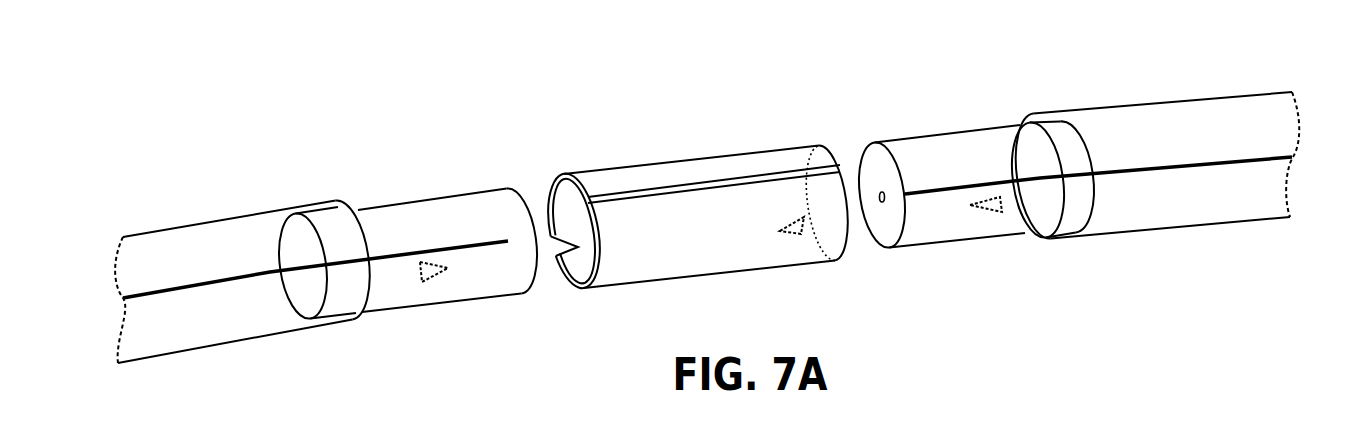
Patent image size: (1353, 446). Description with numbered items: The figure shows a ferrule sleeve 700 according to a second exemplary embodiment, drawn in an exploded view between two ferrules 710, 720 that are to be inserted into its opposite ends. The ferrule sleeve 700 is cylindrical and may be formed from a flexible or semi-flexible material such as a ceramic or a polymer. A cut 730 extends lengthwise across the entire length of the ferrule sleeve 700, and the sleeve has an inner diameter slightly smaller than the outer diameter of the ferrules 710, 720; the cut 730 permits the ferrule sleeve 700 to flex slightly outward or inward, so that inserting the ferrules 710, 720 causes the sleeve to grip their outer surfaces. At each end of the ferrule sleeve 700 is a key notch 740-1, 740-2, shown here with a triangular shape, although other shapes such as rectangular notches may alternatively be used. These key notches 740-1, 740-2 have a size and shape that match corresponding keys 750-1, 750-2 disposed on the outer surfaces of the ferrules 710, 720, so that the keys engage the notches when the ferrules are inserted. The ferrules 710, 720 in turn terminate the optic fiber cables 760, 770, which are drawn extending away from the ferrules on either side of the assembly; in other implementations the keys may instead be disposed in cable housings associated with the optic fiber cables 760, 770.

The ferrule sleeve 700 is at (699, 157).
The ferrule 710 is at (413, 198).
The ferrule 720 is at (958, 132).
The cut 730 is at (842, 167).
The key notch 740-1 is at (553, 257).
The key notch 740-2 is at (817, 227).
The key 750-1 is at (433, 283).
The key 750-2 is at (993, 218).
The optic fiber cable 760 is at (187, 228).
The optic fiber cable 770 is at (1183, 105).